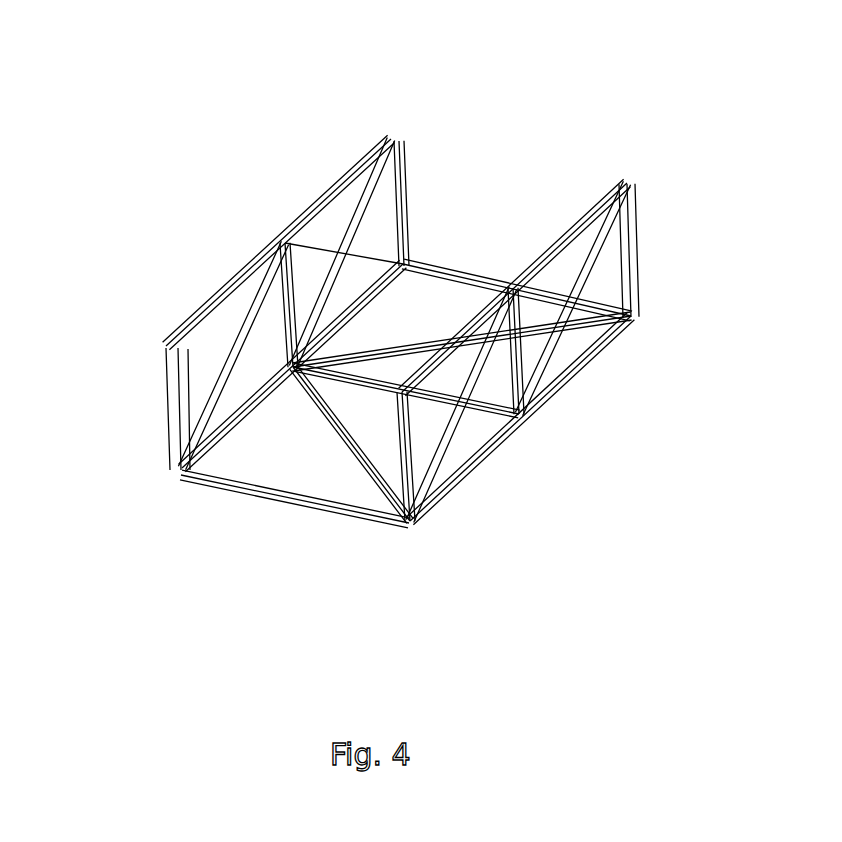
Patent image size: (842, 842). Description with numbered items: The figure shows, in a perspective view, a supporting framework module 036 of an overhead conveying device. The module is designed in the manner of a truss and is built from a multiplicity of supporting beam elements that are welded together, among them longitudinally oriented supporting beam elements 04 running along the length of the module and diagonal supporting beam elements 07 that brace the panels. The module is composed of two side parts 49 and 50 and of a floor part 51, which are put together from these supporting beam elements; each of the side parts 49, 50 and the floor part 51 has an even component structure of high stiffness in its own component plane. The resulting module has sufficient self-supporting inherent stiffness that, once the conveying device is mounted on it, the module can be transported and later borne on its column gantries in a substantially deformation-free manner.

The supporting framework module 036 is at (278, 140).
The side part 50 is at (420, 166).
The side part 49 is at (658, 231).
The longitudinally oriented supporting beam element 04 is at (493, 447).
The floor part 51 is at (455, 258).
The diagonal supporting beam element 07 is at (427, 337).